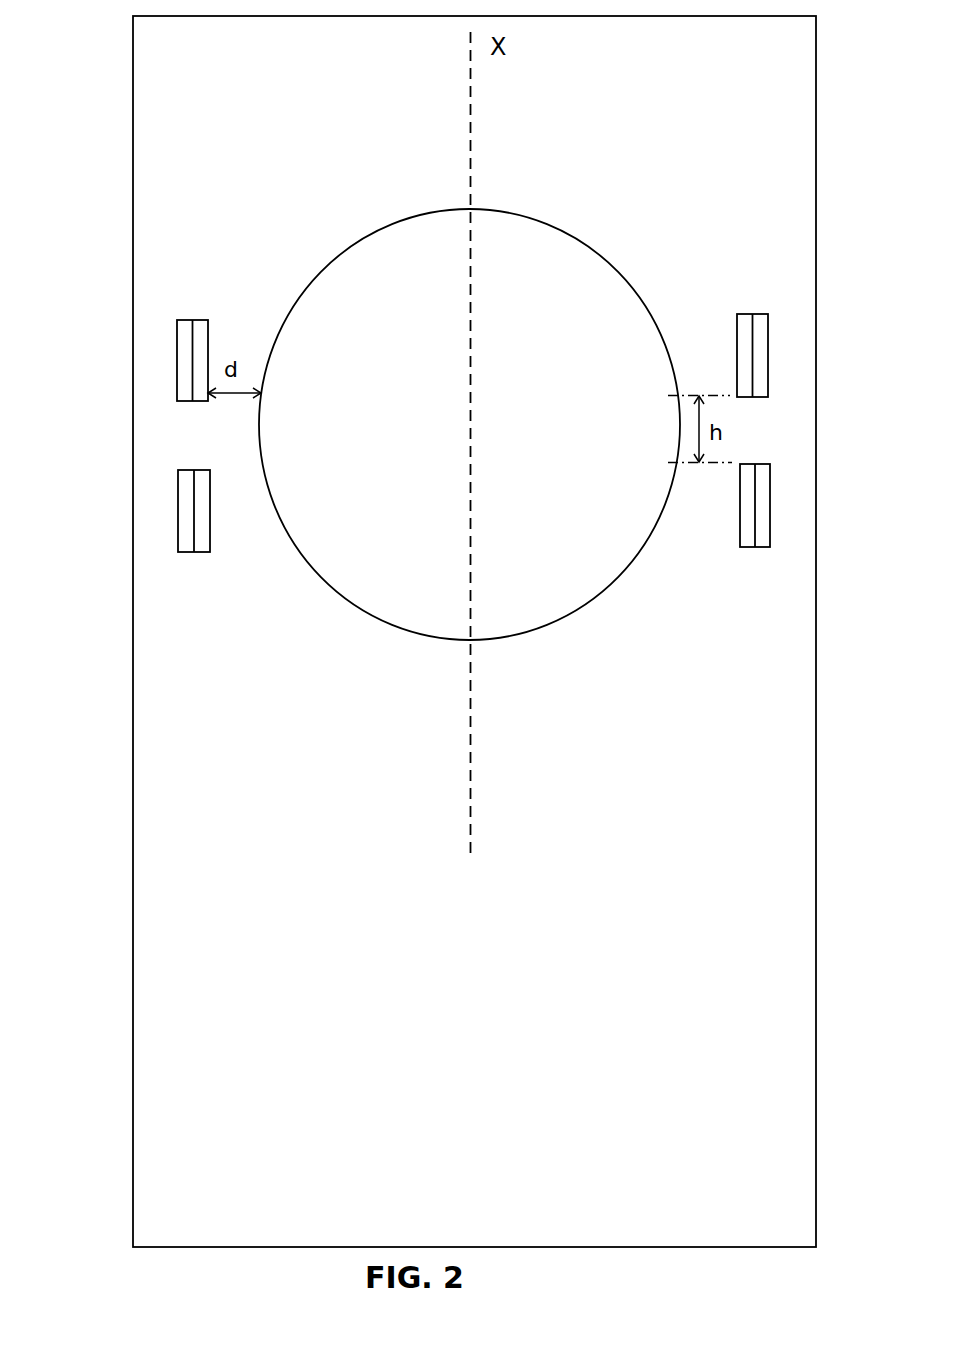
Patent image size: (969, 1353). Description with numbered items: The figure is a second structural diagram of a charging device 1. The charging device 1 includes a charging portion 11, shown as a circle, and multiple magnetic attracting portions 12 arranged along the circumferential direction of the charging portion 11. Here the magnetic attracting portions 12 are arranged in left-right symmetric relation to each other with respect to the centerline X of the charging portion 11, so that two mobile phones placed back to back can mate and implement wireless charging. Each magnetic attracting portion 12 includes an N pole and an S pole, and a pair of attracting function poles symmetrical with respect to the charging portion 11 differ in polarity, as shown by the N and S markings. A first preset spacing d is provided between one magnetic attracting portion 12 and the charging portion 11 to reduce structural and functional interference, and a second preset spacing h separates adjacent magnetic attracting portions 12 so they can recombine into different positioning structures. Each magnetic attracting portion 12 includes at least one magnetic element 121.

The charging device 1 is at (116, 110).
The charging portion 11 is at (653, 317).
The magnetic attracting portion 12 is at (449, 324).
The magnetic element 121 is at (205, 328).